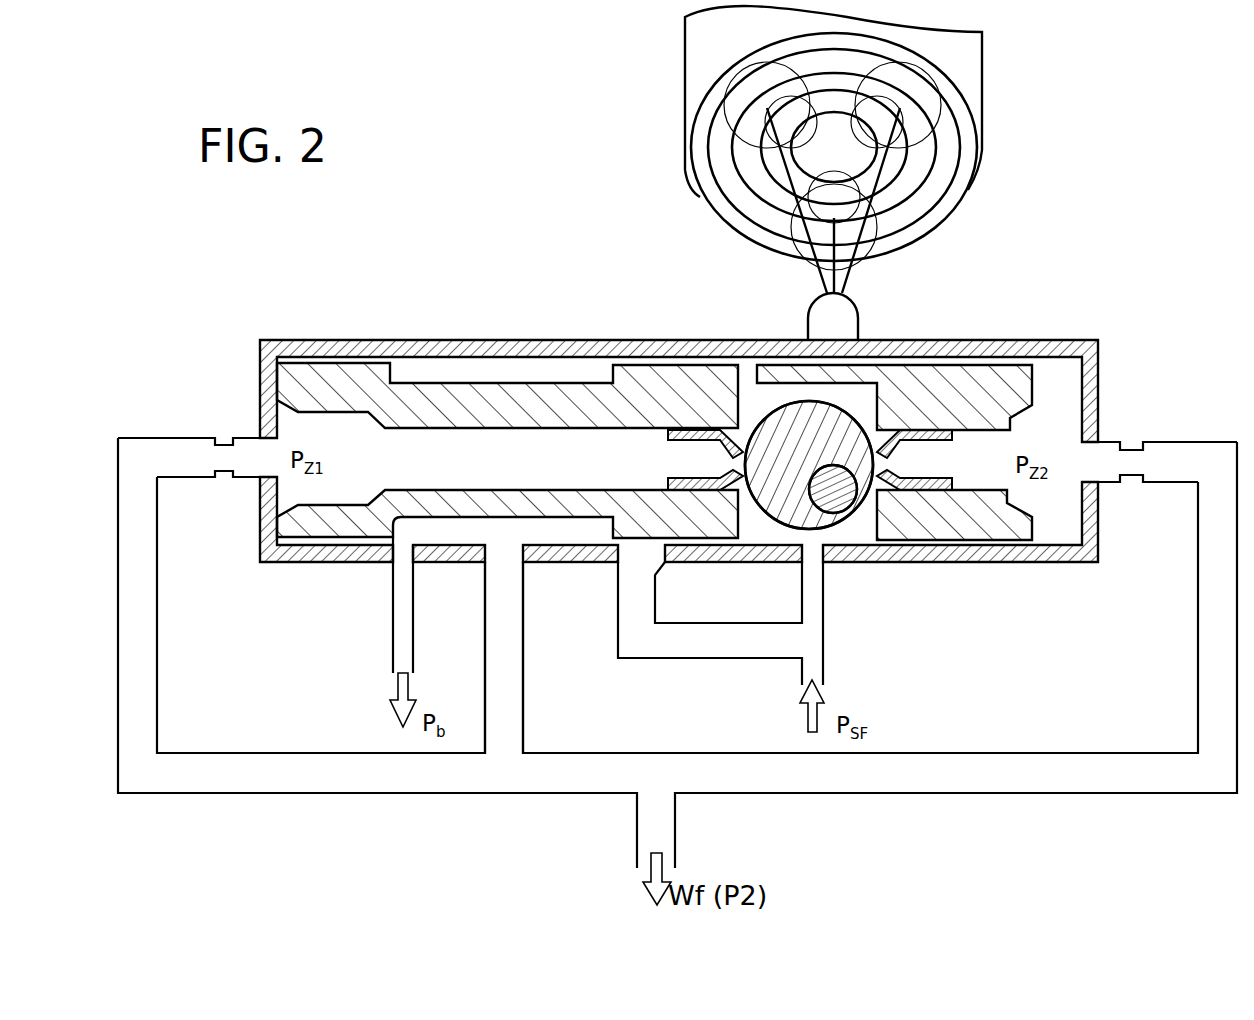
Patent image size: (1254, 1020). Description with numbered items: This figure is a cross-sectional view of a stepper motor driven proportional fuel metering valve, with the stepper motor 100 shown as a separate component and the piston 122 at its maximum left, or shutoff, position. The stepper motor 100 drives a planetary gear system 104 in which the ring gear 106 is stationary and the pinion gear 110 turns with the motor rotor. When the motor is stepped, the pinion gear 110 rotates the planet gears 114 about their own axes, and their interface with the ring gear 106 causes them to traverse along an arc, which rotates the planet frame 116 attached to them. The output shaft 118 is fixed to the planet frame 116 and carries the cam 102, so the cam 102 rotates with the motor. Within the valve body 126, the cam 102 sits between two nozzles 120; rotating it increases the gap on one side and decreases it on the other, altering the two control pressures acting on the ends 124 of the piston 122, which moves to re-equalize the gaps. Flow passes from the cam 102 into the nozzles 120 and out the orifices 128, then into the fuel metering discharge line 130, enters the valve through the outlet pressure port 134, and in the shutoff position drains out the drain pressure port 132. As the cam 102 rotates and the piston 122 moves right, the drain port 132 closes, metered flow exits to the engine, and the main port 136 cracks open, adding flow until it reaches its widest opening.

The stepper motor 100 is at (975, 52).
The cam 102 is at (778, 423).
The planetary gear system 104 is at (706, 150).
The ring gear 106 is at (953, 137).
The pinion gear 110 is at (817, 167).
The planet gears 114 is at (745, 92).
The planet frame 116 is at (907, 183).
The output shaft 118 is at (847, 322).
The nozzle 120 is at (718, 477).
The piston 122 is at (633, 380).
The ends 124 is at (272, 373).
The valve body 126 is at (503, 340).
The orifices 128 is at (266, 446).
The fuel metering discharge line 130 is at (139, 468).
The Pb port 132 is at (402, 647).
The P2 port 134 is at (503, 612).
The main port 136 is at (634, 572).